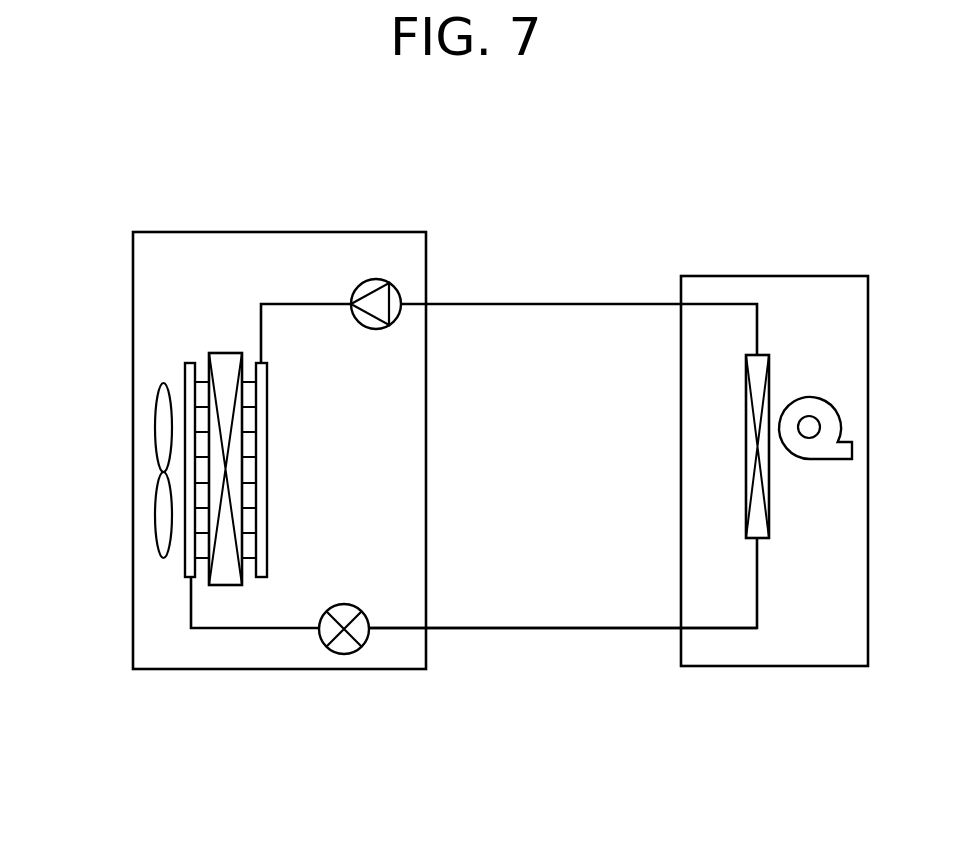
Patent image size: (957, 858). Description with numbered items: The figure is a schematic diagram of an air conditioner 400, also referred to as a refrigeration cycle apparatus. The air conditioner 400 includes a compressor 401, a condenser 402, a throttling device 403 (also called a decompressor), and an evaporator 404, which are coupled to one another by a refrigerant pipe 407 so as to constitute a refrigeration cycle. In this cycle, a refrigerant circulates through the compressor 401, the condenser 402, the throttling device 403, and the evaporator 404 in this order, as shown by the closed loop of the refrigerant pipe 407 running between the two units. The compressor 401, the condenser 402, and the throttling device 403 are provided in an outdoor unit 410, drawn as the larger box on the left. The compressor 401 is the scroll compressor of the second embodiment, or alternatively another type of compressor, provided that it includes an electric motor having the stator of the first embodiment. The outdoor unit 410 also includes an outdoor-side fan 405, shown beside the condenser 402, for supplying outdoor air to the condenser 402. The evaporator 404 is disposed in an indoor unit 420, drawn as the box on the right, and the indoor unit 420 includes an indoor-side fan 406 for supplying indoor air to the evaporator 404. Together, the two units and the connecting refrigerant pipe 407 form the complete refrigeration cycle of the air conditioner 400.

The air conditioner 400 is at (110, 203).
The compressor 401 is at (393, 283).
The condenser 402 is at (225, 585).
The throttling device 403 is at (350, 655).
The evaporator 404 is at (750, 543).
The outdoor-side fan 405 is at (162, 383).
The indoor-side fan 406 is at (820, 397).
The refrigerant pipe 407 is at (555, 625).
The outdoor unit 410 is at (258, 672).
The indoor unit 420 is at (765, 668).